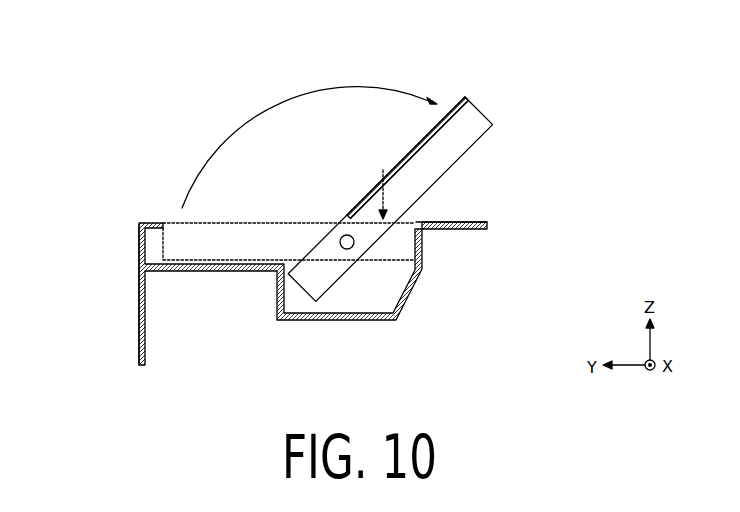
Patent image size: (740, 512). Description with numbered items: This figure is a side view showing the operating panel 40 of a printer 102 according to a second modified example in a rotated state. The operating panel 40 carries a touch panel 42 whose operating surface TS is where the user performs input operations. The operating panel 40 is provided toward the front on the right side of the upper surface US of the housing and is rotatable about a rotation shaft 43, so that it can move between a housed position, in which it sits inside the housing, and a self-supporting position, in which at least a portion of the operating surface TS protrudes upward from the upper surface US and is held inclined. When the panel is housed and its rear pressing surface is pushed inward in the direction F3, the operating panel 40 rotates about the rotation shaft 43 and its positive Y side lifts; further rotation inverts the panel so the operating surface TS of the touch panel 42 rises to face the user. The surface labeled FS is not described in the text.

The printer 102 is at (118, 78).
The operating panel 40 is at (463, 140).
The touch panel 42 is at (377, 185).
The rotation shaft 43 is at (343, 236).
The operating surface TS is at (420, 143).
The upper surface US is at (452, 221).
The front surface FS is at (140, 282).
The direction F3 is at (383, 183).